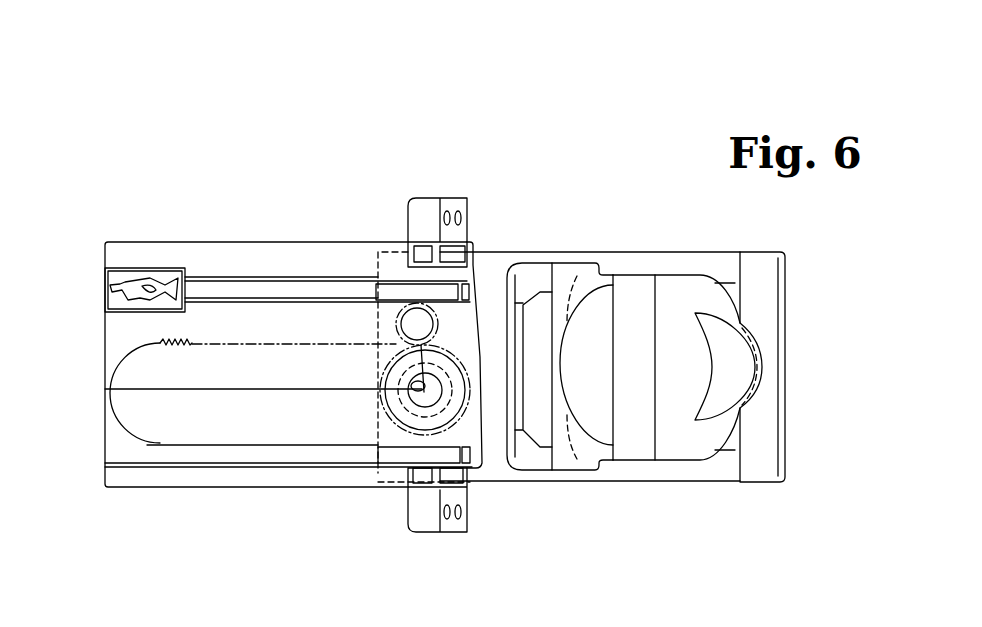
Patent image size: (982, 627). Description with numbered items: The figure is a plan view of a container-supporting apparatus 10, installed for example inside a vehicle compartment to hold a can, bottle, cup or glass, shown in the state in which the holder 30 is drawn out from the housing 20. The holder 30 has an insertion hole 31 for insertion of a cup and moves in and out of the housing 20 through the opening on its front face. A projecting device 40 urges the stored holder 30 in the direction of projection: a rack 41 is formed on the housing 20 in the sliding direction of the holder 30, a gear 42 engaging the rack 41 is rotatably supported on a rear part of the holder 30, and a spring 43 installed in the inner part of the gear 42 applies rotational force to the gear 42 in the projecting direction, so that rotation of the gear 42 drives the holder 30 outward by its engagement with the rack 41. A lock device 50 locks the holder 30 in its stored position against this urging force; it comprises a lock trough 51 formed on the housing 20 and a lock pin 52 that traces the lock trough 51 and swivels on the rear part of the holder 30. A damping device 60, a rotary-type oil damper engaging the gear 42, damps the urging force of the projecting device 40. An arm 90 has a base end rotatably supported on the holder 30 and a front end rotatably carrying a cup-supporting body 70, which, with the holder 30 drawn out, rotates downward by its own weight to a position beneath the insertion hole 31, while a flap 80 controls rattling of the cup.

The container-supporting apparatus 10 is at (290, 94).
The housing 20 is at (110, 490).
The holder 30 is at (758, 484).
The insertion hole 31 is at (685, 297).
The projecting device 40 is at (313, 555).
The rack 41 is at (170, 346).
The gear 42 is at (402, 420).
The spring 43 is at (482, 470).
The lock device 50 is at (184, 158).
The lock trough 51 is at (148, 270).
The lock pin 52 is at (408, 294).
The damping device 60 is at (403, 286).
The cup-supporting body 70 is at (630, 443).
The flap 80 is at (740, 370).
The arm 90 is at (527, 452).